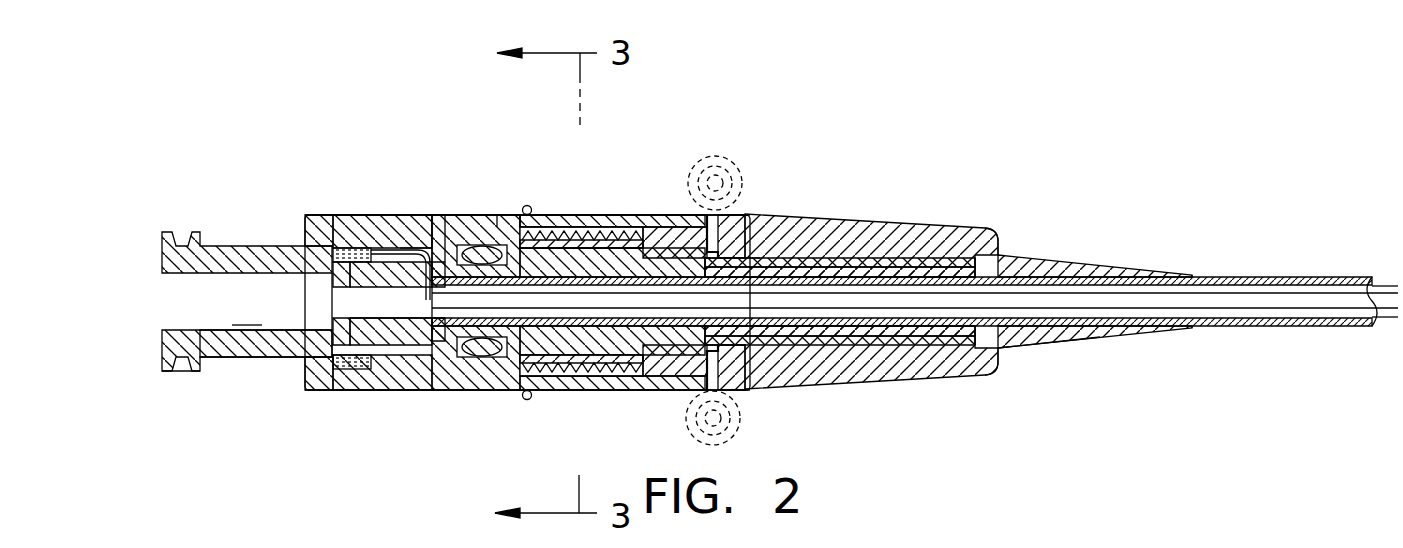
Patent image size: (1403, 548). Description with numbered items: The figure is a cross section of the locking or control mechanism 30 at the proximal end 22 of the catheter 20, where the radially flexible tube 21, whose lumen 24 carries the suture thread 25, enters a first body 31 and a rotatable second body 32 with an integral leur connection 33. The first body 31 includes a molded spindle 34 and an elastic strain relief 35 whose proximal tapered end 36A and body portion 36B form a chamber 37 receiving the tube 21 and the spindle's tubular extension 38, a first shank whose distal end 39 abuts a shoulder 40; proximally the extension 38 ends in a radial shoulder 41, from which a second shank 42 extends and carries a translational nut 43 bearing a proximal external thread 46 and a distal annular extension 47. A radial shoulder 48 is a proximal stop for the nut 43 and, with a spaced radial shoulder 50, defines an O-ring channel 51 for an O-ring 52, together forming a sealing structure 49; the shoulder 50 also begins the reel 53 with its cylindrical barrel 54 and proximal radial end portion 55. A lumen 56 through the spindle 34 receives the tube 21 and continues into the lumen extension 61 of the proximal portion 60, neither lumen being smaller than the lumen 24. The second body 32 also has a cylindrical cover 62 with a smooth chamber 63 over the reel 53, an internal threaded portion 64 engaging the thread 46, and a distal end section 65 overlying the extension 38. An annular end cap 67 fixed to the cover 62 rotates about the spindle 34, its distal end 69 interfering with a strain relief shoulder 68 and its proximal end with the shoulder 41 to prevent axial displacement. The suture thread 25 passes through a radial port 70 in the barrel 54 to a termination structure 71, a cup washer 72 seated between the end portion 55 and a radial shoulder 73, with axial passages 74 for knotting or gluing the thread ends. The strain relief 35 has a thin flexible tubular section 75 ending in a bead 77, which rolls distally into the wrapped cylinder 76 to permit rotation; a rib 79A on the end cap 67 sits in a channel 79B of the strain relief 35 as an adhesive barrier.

The catheter 20 is at (853, 153).
The radially flexible tube 21 is at (1305, 278).
The proximal end 22 is at (1118, 215).
The lumen 24 is at (1333, 300).
The flexible link 25 is at (1212, 297).
The locking mechanism 30 is at (488, 137).
The first body 31 is at (966, 175).
The second body 32 is at (378, 443).
The leur connection 33 is at (180, 232).
The spindle 34 is at (530, 398).
The strain relief 35 is at (997, 362).
The proximal tapered end 36A is at (1100, 338).
The body portion 36B is at (893, 240).
The chamber 37 is at (930, 345).
The tubular extension 38 is at (875, 346).
The distal end 39 is at (1010, 348).
The shoulder 40 is at (990, 228).
The radial shoulder 41 is at (645, 215).
The portion of the spindle 42 is at (603, 215).
The translational nut 43 is at (535, 215).
The proximal external thread 46 is at (512, 214).
The distal annular extension 47 is at (565, 215).
The radial shoulder 48 is at (497, 215).
The sealing structure 49 is at (463, 183).
The radial shoulder 50 is at (400, 236).
The O-ring channel 51 is at (430, 250).
The O-ring 52 is at (455, 236).
The spool or reel 53 is at (338, 262).
The cylindrical central barrel 54 is at (375, 250).
The proximal radial end portion 55 is at (328, 270).
The lumen 56 is at (382, 332).
The proximal portion 60 is at (195, 371).
The lumen extension 61 is at (247, 312).
The cylindrical cover 62 is at (495, 392).
The proximal smooth chamber 63 is at (425, 380).
The internal intermediate threaded portion 64 is at (556, 390).
The distal end section 65 is at (638, 391).
The annular end cap 67 is at (685, 212).
The strain relief shoulder 68 is at (722, 216).
The distal end of the end cap 69 is at (718, 240).
The radial port 70 is at (437, 352).
The termination structure 71 is at (282, 357).
The cup washer 72 is at (358, 372).
The radial shoulder 73 is at (330, 314).
The axially extending passages 74 is at (345, 248).
The flexible tubular section 75 is at (620, 215).
The wrapped cylinder 76 is at (712, 157).
The proximal bead 77 is at (529, 205).
The proximally extending rib or shoulder 79A is at (735, 392).
The proximally facing channel 79B is at (762, 218).